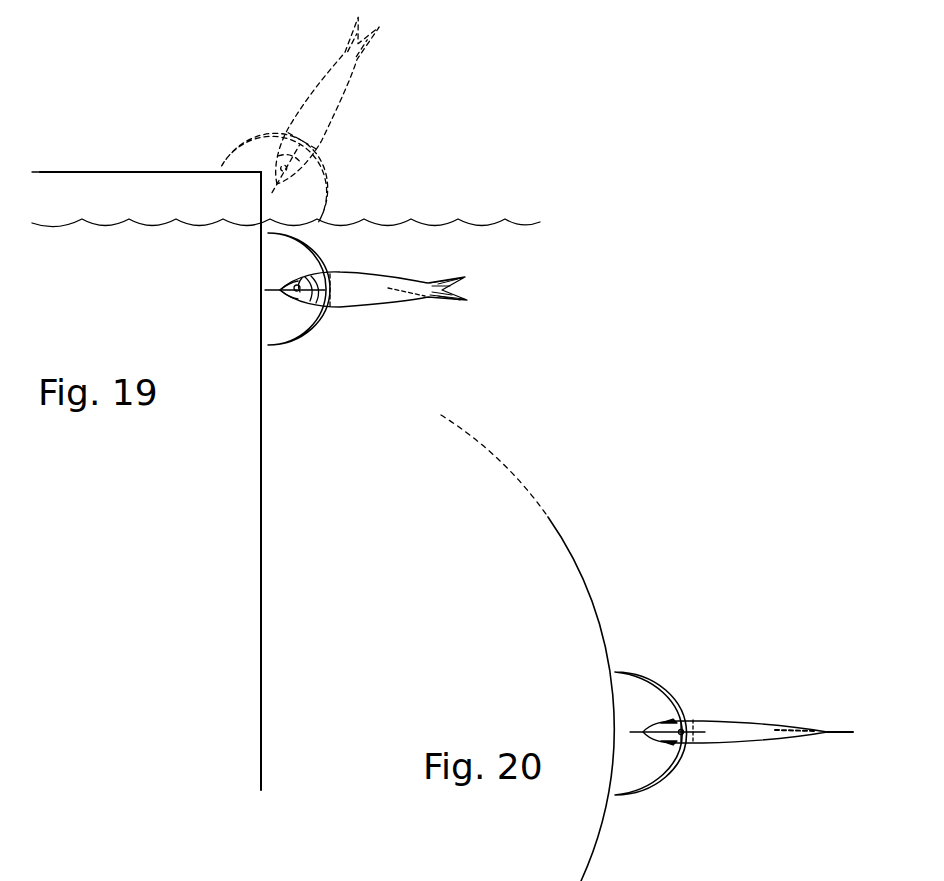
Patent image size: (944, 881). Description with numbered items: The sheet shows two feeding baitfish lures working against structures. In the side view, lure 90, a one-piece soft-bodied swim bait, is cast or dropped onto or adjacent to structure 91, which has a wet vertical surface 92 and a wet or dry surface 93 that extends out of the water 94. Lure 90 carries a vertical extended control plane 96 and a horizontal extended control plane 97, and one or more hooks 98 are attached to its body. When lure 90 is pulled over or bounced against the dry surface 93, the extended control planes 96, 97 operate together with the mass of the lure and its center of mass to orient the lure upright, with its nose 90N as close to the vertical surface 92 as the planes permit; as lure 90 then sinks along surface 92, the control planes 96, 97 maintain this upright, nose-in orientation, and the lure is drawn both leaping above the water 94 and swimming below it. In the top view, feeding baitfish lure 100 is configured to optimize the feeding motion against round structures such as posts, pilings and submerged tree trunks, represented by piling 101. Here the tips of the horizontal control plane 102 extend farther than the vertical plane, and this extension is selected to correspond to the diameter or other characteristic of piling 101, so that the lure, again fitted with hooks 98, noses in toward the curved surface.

In FIG. 19, the lure 90 is at (377, 86).
In FIG. 19, the nose 90N is at (256, 314).
In FIG. 19, the structure 91 is at (118, 112).
In FIG. 19, the vertical surface 92 is at (262, 483).
In FIG. 19, the surface 93 is at (68, 174).
In FIG. 19, the water 94 is at (378, 222).
In FIG. 19, the vertical extended control plane 96 is at (320, 292).
In FIG. 19, the horizontal extended control plane 97 is at (275, 273).
In FIG. 19, the hook 98 is at (406, 314).
In FIG. 20, the hook 98 is at (800, 711).
In FIG. 20, the feeding baitfish lure 100 is at (748, 684).
In FIG. 20, the piling 101 is at (583, 589).
In FIG. 20, the horizontal control plane 102 is at (660, 678).